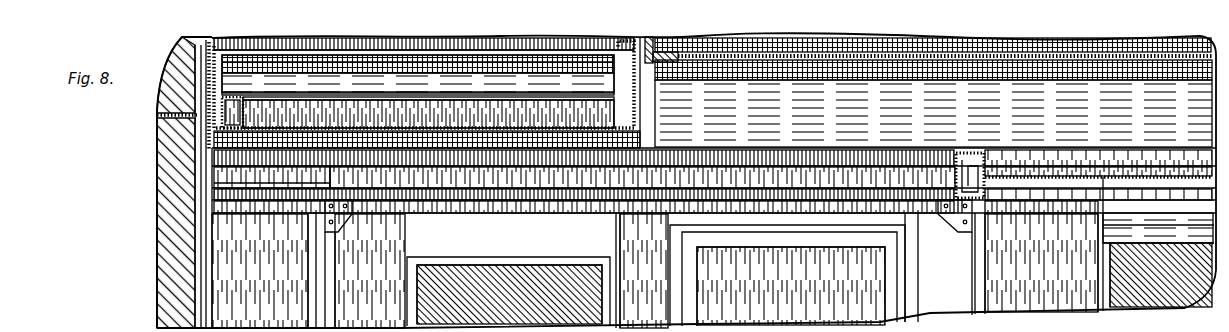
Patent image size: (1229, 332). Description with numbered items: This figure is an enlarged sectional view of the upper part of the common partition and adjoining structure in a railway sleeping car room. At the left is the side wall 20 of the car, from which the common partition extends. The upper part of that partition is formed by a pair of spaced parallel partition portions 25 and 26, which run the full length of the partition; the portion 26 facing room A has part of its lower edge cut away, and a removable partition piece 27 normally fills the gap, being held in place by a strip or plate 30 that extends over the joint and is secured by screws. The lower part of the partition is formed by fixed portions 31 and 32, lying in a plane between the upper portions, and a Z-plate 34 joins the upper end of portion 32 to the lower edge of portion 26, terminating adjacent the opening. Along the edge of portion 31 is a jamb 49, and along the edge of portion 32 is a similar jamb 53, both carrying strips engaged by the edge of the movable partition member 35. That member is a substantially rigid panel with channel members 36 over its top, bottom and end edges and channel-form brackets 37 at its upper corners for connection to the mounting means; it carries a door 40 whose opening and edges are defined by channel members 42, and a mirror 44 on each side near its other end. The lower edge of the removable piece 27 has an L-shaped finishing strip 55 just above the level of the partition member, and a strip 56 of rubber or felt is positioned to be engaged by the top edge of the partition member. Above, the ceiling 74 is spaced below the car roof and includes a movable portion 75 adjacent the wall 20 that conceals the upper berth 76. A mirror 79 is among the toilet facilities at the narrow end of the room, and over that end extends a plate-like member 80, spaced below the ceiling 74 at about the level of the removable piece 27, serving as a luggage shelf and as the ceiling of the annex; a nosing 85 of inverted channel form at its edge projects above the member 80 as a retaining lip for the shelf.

The side wall 20 is at (165, 256).
The partition portion 25 is at (671, 320).
The partition portion 26 is at (718, 126).
The removable partition piece 27 is at (786, 172).
The strip or plate 30 is at (740, 148).
The fixed partition portion 31 is at (266, 253).
The fixed partition portion 32 is at (1043, 256).
The Z-plate 34 is at (270, 185).
The movable partition member 35 is at (641, 246).
The channel member 36 is at (337, 300).
The channel-form bracket 37 is at (922, 222).
The door 40 is at (800, 288).
The channel member 42 is at (896, 290).
The mirror 44 is at (540, 266).
The jamb 49 is at (307, 280).
The jamb 53 is at (992, 297).
The L-shaped finishing strip 55 is at (458, 196).
The strip 56 is at (506, 203).
The ceiling 74 is at (806, 57).
The movable ceiling portion 75 is at (462, 128).
The upper berth 76 is at (402, 95).
The mirror 79 is at (1125, 287).
The plate-like member 80 is at (1120, 165).
The nosing 85 is at (975, 154).